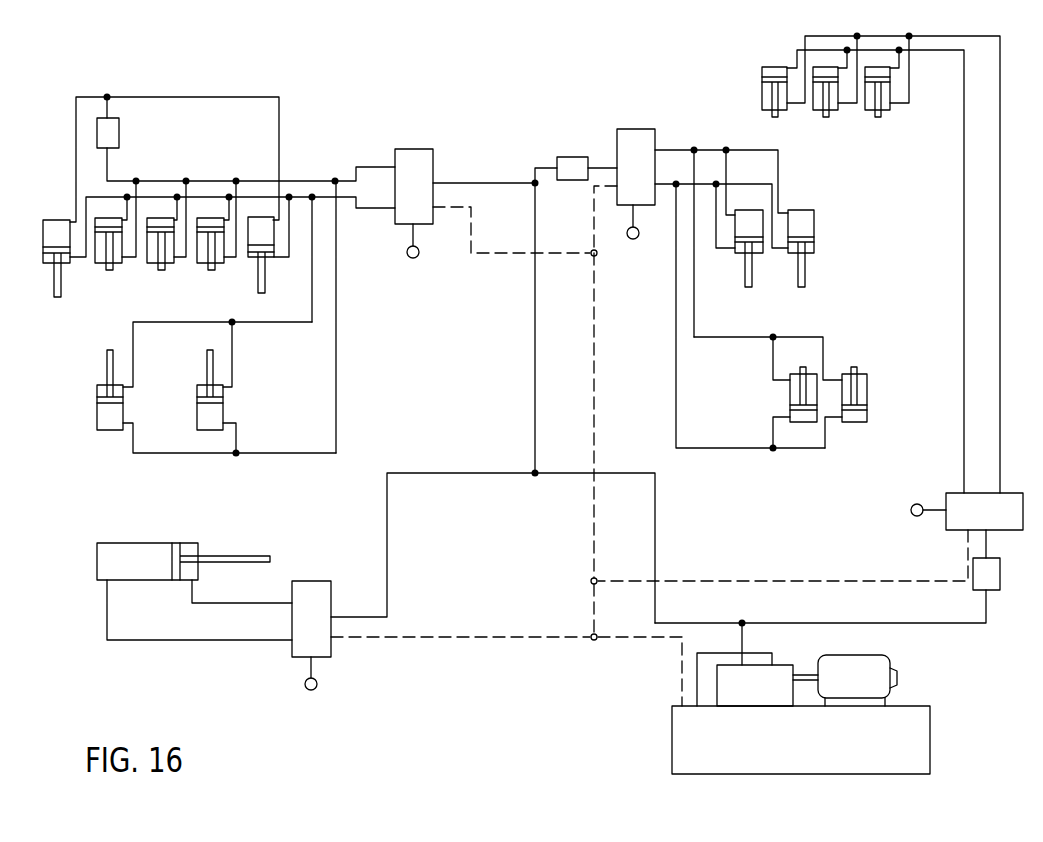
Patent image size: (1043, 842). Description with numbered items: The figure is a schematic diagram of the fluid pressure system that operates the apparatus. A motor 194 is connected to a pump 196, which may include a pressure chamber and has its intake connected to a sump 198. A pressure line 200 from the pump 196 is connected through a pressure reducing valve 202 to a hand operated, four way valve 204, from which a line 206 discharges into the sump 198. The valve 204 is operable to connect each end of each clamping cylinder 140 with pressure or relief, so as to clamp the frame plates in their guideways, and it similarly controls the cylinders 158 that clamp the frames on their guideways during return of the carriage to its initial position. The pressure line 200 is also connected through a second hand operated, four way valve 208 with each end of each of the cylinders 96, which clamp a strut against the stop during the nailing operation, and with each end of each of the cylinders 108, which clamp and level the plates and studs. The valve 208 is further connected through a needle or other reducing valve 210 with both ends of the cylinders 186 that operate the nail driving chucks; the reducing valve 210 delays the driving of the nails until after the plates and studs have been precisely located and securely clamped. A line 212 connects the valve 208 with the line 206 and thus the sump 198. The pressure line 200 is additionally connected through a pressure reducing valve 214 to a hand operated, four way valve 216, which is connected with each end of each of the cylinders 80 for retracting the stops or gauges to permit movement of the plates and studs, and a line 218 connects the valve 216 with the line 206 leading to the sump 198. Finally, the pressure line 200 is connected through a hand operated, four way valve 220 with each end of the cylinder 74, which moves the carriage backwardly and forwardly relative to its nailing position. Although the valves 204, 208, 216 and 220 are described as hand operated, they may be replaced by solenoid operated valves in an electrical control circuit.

The cylinder 74 is at (155, 543).
The cylinders 80 is at (775, 117).
The cylinders 96 is at (110, 270).
The cylinders 108 is at (206, 366).
The clamping cylinders 140 is at (853, 367).
The cylinders 158 is at (793, 303).
The cylinders 186 is at (54, 279).
The motor 194 is at (882, 665).
The pump 196 is at (783, 663).
The sump 198 is at (932, 731).
The pressure line 200 is at (656, 543).
The pressure reducing valve 202 is at (573, 181).
The four way valve 204 is at (657, 136).
The line 206 is at (597, 421).
The four way valve 208 is at (425, 150).
The reducing valve 210 is at (119, 130).
The line 212 is at (499, 257).
The pressure reducing valve 214 is at (976, 583).
The four way valve 216 is at (950, 493).
The line 218 is at (770, 582).
The four way valve 220 is at (292, 620).